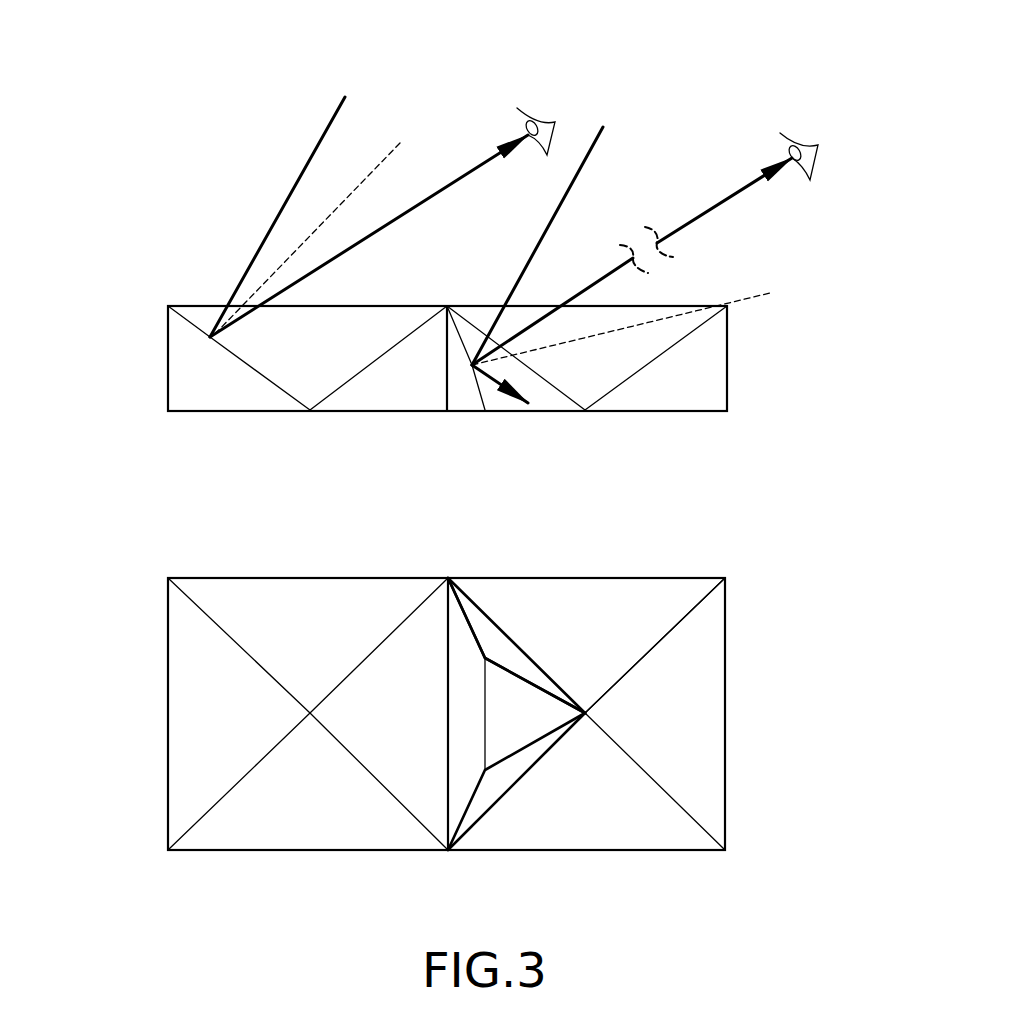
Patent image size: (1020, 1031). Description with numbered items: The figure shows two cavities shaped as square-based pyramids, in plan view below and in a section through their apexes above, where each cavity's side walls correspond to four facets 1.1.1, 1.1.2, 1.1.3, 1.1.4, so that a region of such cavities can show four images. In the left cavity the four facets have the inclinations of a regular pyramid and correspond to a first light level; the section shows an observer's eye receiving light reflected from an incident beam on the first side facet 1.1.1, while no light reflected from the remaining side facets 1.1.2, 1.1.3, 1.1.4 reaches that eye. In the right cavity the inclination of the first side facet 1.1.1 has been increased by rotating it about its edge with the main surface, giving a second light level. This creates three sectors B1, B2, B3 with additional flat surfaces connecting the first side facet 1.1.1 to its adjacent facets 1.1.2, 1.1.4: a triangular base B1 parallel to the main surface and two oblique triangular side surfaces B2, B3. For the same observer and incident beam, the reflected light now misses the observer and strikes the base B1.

The first side facet 1.1.1 is at (190, 322).
The second side facet 1.1.2 is at (390, 347).
The third side facet 1.1.3 is at (670, 347).
The fourth side facet 1.1.4 is at (220, 603).
The base sector B1 is at (555, 398).
The oblique side sector B2 is at (502, 652).
The oblique side sector B3 is at (490, 793).